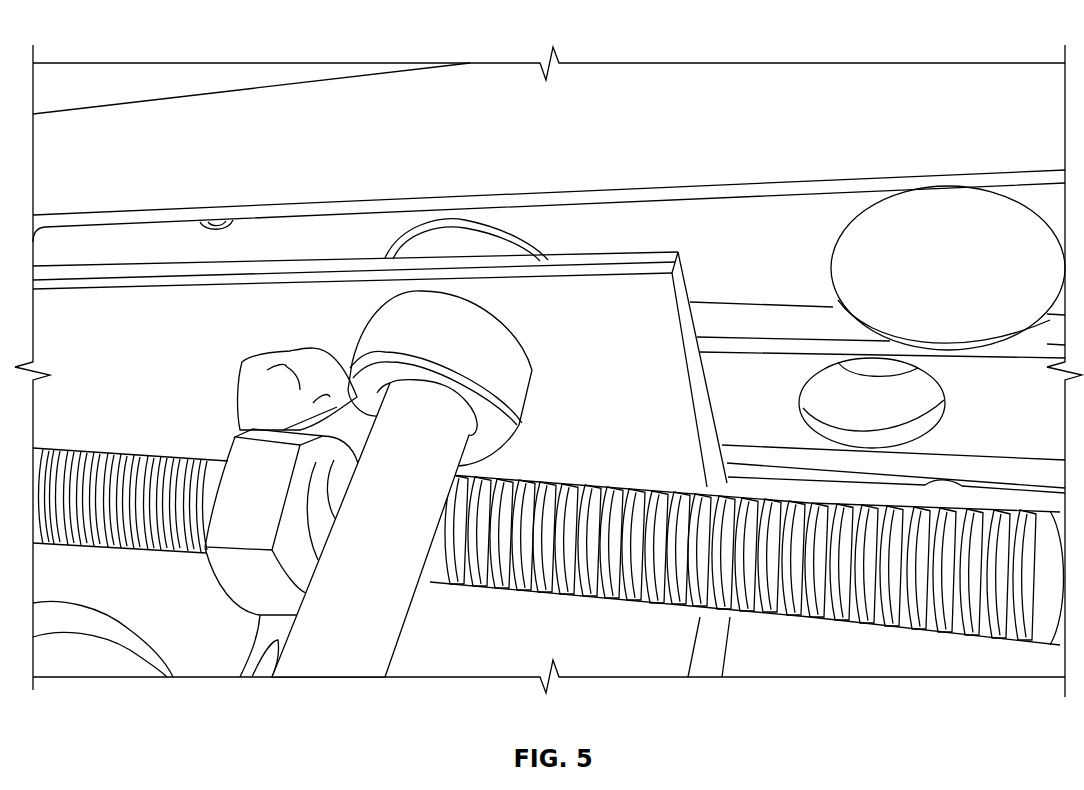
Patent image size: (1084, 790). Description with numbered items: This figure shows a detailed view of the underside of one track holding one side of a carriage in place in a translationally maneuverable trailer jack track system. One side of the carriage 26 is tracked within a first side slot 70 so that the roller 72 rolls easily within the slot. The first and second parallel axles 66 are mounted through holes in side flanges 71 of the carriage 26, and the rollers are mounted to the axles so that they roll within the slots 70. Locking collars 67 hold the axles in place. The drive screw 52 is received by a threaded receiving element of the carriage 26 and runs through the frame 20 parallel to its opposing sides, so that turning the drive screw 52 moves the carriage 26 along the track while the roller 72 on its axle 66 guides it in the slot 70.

The frame 20 is at (705, 135).
The carriage 26 is at (578, 263).
The drive screw 52 is at (753, 583).
The parallel axle 66 is at (367, 602).
The locking collar 67 is at (445, 320).
The side slot 70 is at (785, 230).
The side flange 71 is at (712, 392).
The roller 72 is at (480, 227).